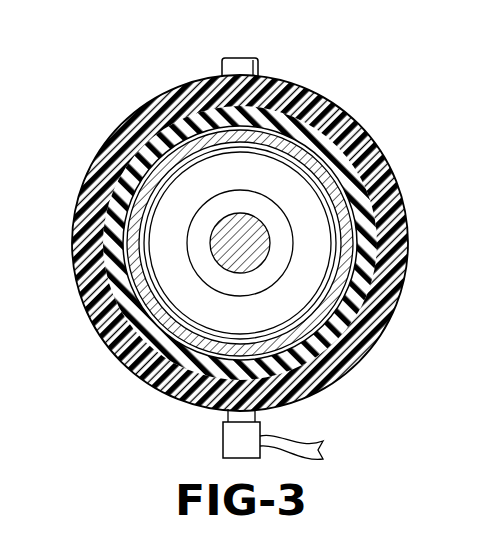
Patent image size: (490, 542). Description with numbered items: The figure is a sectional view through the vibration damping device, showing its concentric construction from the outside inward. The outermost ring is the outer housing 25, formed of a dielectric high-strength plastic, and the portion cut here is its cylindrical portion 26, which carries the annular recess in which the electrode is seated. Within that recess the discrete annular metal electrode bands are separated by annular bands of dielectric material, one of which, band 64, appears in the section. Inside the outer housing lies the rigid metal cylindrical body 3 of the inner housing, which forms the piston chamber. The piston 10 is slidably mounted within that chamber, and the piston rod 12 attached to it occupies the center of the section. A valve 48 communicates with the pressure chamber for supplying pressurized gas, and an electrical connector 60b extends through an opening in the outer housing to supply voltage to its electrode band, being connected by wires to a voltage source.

The cylindrical body 3 is at (178, 125).
The annular band of dielectric material 64 is at (152, 155).
The outer housing 25 is at (343, 102).
The cylindrical portion 26 is at (365, 146).
The valve 48 is at (259, 69).
The piston 10 is at (315, 273).
The piston rod 12 is at (245, 253).
The electrical connector 60b is at (237, 441).